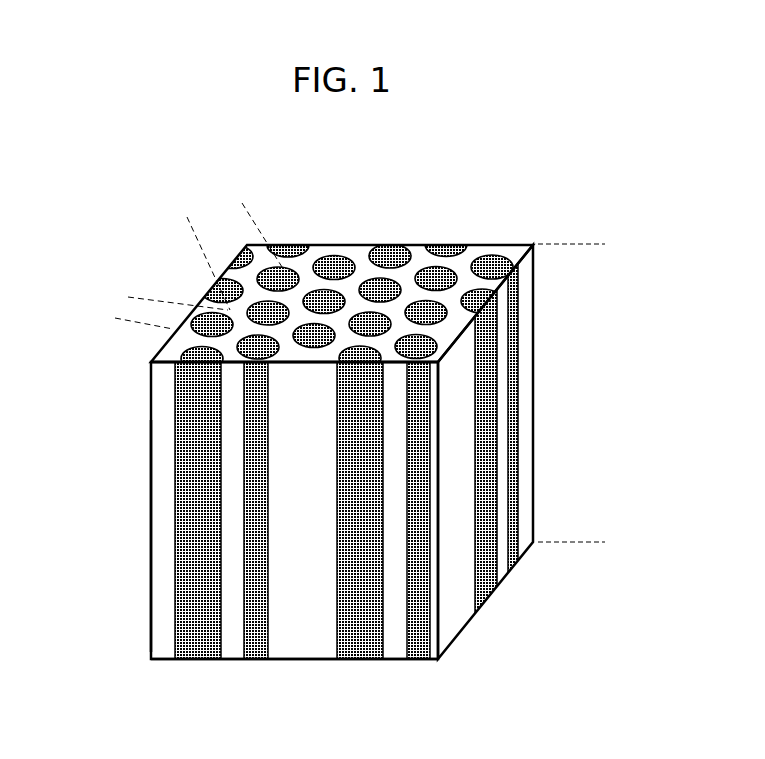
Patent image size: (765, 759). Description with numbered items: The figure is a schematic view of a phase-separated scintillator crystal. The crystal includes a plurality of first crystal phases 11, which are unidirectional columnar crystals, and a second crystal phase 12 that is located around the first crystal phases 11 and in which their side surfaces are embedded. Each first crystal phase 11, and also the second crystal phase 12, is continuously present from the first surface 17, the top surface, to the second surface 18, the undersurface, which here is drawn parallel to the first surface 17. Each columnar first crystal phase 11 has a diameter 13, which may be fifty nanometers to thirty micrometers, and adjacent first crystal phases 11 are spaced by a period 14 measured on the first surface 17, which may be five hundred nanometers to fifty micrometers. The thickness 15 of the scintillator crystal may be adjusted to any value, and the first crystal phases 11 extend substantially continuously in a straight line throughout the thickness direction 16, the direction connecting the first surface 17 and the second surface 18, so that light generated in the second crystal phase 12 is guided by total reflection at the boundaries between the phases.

The first crystal phases 11 is at (350, 258).
The second crystal phase 12 is at (418, 267).
The diameter 13 is at (162, 262).
The period 14 is at (242, 207).
The thickness 15 is at (592, 256).
The thickness direction 16 is at (95, 432).
The first surface 17 is at (152, 362).
The second surface 18 is at (151, 660).